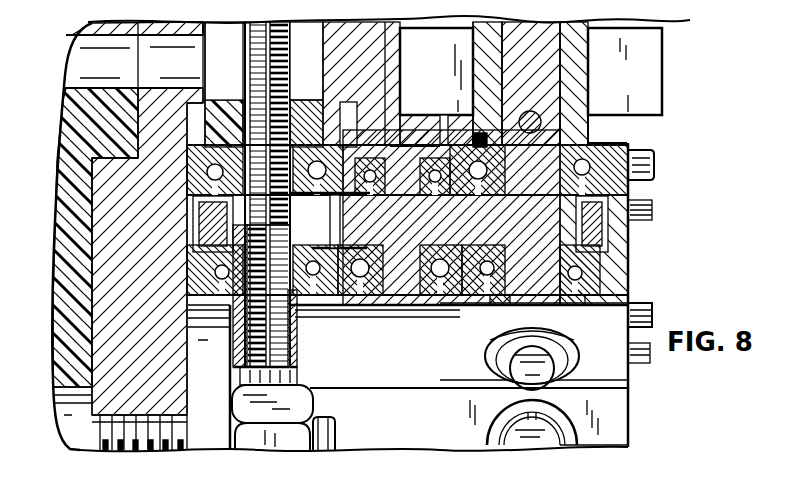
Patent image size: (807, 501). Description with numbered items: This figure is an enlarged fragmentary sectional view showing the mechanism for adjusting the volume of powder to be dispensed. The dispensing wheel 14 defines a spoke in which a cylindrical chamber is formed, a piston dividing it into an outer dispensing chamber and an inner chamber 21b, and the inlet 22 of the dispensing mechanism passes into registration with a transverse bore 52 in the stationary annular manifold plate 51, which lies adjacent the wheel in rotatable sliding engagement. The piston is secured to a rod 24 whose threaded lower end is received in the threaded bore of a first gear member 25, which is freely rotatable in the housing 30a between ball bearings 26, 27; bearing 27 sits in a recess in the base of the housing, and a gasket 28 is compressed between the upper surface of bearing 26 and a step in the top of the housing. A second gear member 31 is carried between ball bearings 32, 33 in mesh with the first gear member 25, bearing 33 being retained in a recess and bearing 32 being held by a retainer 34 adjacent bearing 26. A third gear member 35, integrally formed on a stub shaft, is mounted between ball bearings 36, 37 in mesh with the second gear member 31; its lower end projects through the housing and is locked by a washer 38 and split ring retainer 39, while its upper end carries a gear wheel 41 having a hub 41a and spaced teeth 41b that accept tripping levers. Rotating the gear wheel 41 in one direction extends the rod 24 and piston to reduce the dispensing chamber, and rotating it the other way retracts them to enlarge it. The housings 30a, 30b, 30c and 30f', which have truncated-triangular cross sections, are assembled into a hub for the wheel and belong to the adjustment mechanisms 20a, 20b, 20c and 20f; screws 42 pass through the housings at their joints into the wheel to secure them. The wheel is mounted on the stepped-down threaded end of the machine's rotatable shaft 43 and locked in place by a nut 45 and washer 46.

The dispensing wheel 14 is at (100, 212).
The adjustment mechanism 20a is at (630, 262).
The adjustment mechanism 20b is at (630, 327).
The adjustment mechanism 20c is at (610, 431).
The adjustment mechanism 20f is at (714, 0).
The inner chamber 21b is at (300, 40).
The inlet 22 is at (163, 60).
The rod 24 is at (258, 50).
The first gear member 25 is at (222, 223).
The ball bearing 26 is at (207, 172).
The ball bearing 27 is at (215, 274).
The gasket 28 is at (218, 103).
The housing 30a is at (623, 232).
The housing 30b is at (629, 362).
The housing 30c is at (632, 415).
The housing 30f' is at (500, 73).
The second gear member 31 is at (383, 325).
The ball bearing 32 is at (420, 146).
The ball bearing 33 is at (360, 278).
The retainer 34 is at (393, 146).
The third gear member 35 is at (584, 215).
The ball bearing 36 is at (603, 163).
The ball bearing 37 is at (580, 276).
The washer 38 is at (488, 313).
The split ring retainer 39 is at (495, 330).
The gear wheel 41 is at (662, 107).
The hub 41a is at (577, 83).
The teeth 41b is at (455, 37).
The screws 42 is at (654, 168).
The rotatable shaft 43 is at (338, 432).
The nut 45 is at (298, 400).
The washer 46 is at (200, 442).
The manifold plate 51 is at (55, 298).
The transverse bore 52 is at (95, 62).